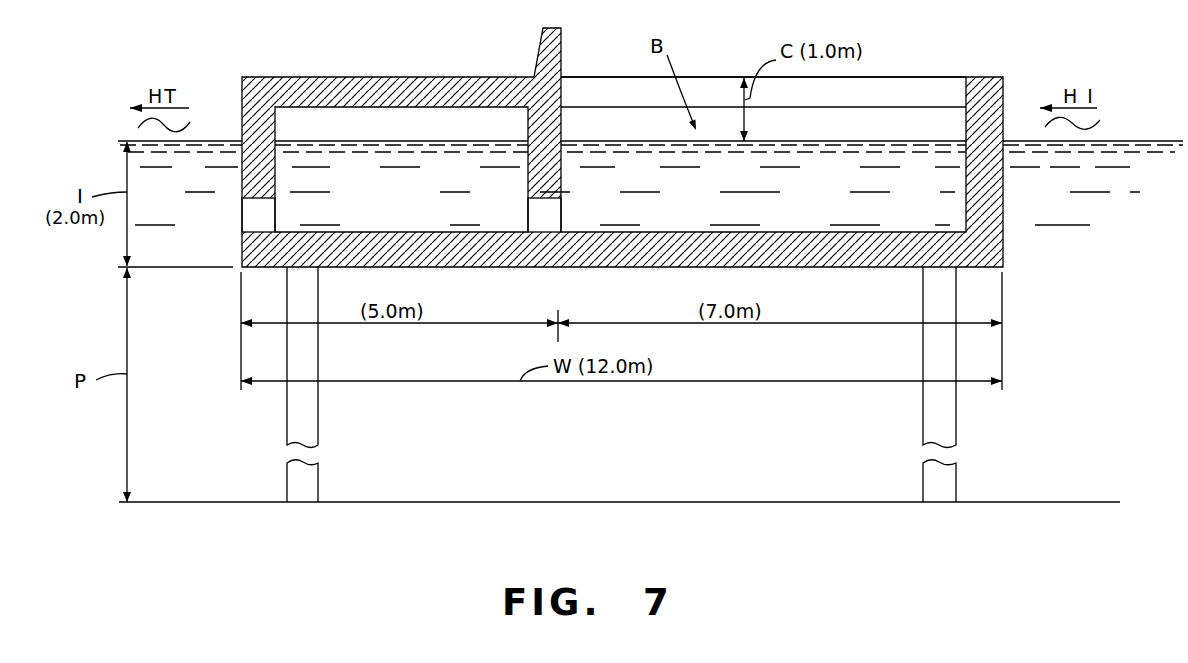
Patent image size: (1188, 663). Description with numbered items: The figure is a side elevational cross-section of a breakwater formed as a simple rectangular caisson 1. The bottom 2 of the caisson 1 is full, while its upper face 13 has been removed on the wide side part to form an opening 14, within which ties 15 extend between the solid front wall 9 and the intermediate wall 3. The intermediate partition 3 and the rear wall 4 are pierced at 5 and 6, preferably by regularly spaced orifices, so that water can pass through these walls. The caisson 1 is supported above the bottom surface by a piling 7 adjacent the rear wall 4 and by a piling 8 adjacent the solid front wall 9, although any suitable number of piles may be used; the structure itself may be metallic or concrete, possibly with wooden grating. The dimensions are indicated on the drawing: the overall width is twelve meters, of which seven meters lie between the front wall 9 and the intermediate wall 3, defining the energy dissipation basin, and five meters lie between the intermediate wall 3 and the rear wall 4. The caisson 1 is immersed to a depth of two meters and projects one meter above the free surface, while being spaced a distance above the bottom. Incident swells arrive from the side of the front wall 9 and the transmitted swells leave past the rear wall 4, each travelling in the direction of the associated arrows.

The caisson 1 is at (990, 62).
The bottom 2 is at (850, 262).
The intermediate wall 3 is at (556, 125).
The rear wall 4 is at (247, 118).
The orifices in intermediate partition 5 is at (258, 199).
The orifices in rear wall 6 is at (545, 199).
The piling 7 is at (311, 418).
The piling 8 is at (926, 404).
The front wall 9 is at (995, 183).
The upper face 13 is at (418, 83).
The opening 14 is at (562, 95).
The ties 15 is at (713, 88).